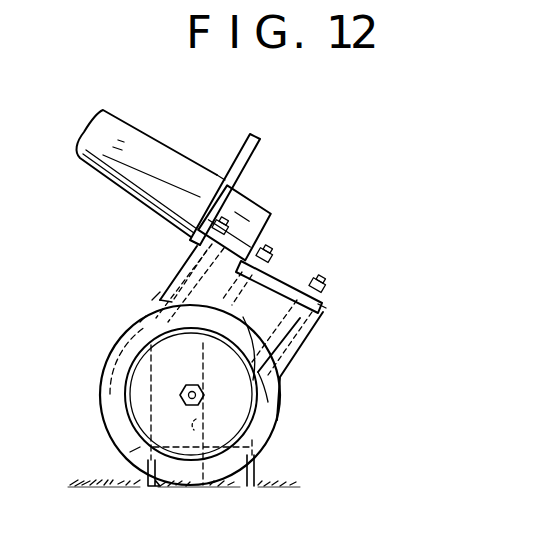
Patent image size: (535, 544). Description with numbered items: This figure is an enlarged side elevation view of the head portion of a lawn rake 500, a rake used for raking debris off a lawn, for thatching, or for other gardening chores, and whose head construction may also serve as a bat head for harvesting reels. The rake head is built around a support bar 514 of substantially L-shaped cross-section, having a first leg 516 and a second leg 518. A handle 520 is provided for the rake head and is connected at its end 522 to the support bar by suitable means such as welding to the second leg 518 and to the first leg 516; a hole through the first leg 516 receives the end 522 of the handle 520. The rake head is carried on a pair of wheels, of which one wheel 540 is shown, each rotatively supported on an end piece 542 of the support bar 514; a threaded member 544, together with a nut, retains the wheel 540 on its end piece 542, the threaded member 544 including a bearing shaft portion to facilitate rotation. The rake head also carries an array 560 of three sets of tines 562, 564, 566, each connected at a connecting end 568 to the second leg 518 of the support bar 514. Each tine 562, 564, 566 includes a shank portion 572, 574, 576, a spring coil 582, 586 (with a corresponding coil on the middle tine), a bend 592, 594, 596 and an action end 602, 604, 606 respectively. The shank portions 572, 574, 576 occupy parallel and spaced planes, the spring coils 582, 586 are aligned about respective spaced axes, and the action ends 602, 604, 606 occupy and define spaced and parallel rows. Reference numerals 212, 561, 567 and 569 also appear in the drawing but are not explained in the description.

The rake 500 is at (355, 148).
The handle 520 is at (140, 150).
The joint between bar and plate 212 is at (226, 156).
The first leg 516 is at (256, 136).
The end 522 is at (260, 185).
The shank portion 574 is at (256, 258).
The second leg 518 is at (293, 280).
The array 560 is at (133, 258).
The support bar 514 is at (166, 262).
The end piece 542 is at (146, 298).
The bolt 569 is at (326, 293).
The connecting end 568 is at (330, 318).
The arm 567 is at (316, 338).
The shank portion 572 is at (313, 357).
The spring coil 582 is at (299, 383).
The bend 592 is at (286, 410).
The spring coil 586 is at (198, 280).
The clamp arm 561 is at (230, 320).
The shank portion 576 is at (152, 300).
The bend 596 is at (140, 322).
The wheel 540 is at (272, 445).
The tine 566 is at (185, 402).
The tine 564 is at (238, 388).
The tine 562 is at (219, 420).
The bend 594 is at (204, 361).
The threaded member 544 is at (133, 450).
The action end 606 is at (135, 487).
The action end 604 is at (195, 485).
The action end 602 is at (256, 476).